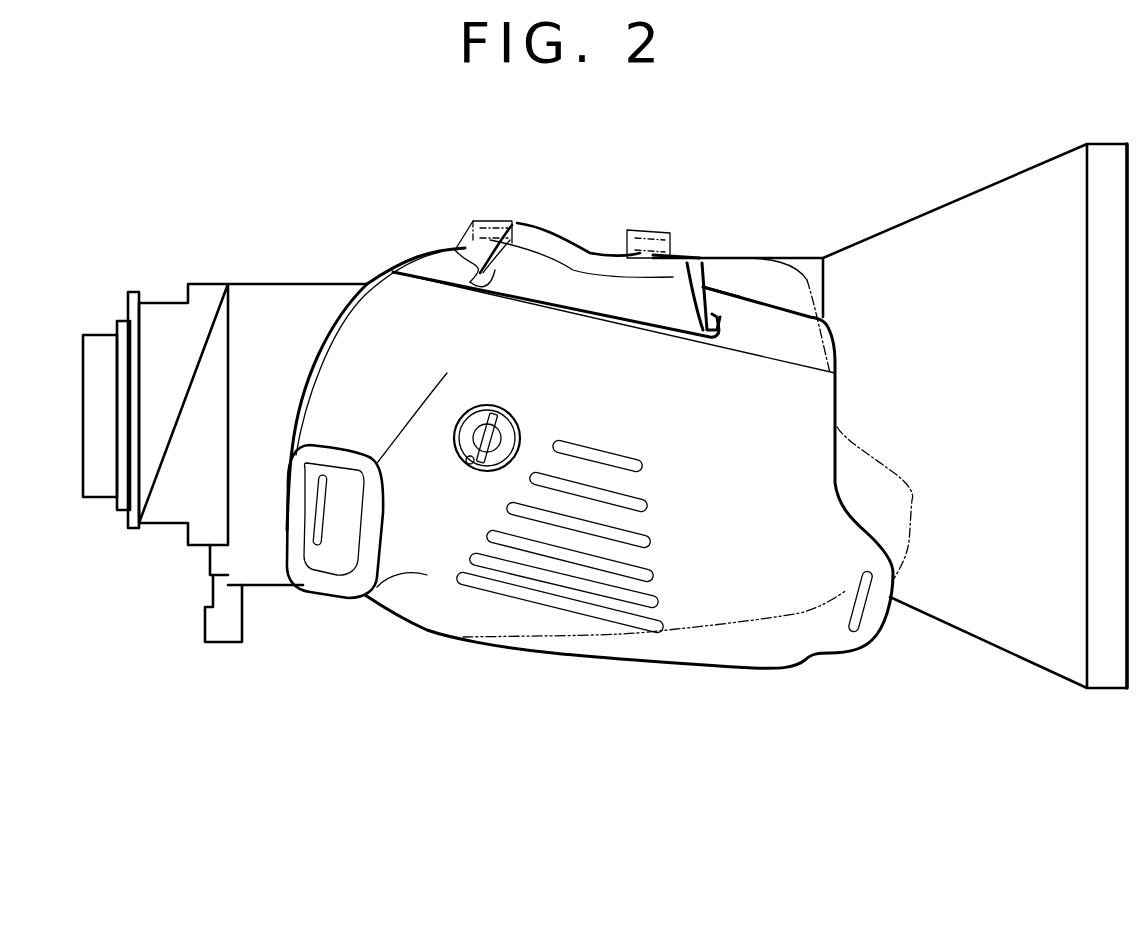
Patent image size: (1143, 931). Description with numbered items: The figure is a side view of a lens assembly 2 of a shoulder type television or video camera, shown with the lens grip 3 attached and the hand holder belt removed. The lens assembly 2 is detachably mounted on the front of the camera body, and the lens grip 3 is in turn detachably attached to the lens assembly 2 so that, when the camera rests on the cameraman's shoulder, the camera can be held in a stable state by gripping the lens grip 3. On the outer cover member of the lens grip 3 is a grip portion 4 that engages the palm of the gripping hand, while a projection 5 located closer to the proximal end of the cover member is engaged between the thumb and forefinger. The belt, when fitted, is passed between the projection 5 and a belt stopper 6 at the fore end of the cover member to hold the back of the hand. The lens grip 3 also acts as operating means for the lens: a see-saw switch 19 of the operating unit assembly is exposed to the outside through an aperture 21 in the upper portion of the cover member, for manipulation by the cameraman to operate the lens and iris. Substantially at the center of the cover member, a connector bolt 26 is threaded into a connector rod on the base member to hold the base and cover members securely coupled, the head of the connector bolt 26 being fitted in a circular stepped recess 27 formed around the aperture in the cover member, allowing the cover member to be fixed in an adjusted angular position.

The lens assembly 2 is at (312, 282).
The lens grip 3 is at (747, 673).
The grip portion 4 is at (575, 557).
The projection 5 is at (342, 585).
The belt stopper 6 is at (860, 640).
The see-saw switch 19 is at (603, 263).
The aperture 21 is at (717, 317).
The connector bolt 26 is at (467, 413).
The circular stepped recess 27 is at (473, 460).